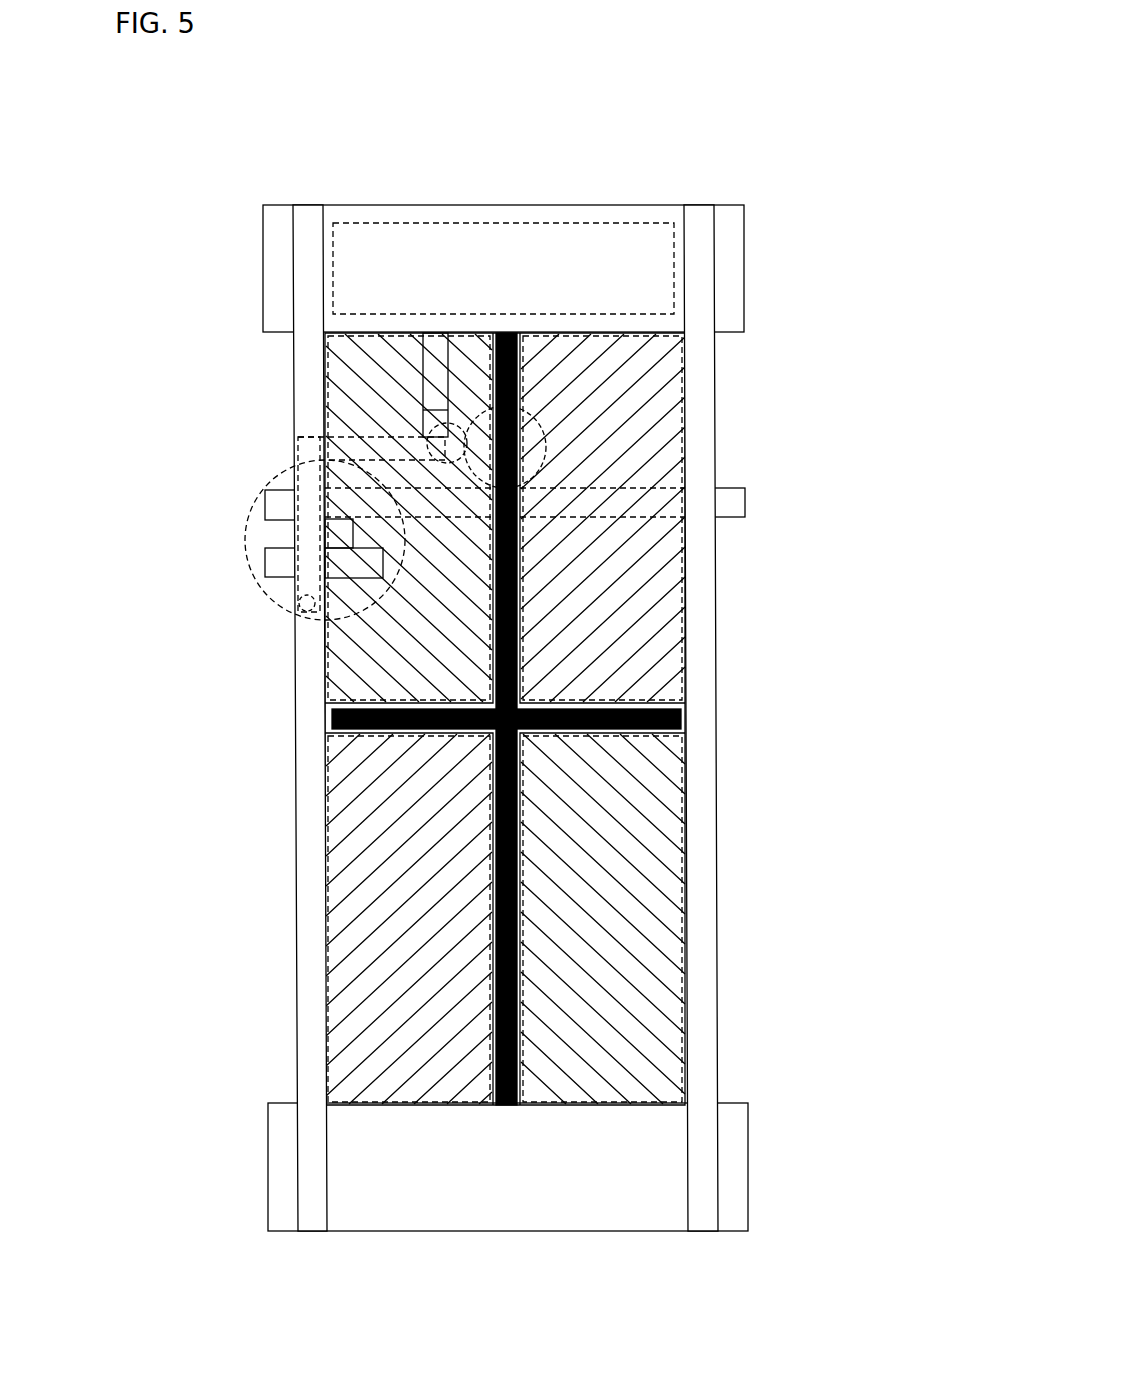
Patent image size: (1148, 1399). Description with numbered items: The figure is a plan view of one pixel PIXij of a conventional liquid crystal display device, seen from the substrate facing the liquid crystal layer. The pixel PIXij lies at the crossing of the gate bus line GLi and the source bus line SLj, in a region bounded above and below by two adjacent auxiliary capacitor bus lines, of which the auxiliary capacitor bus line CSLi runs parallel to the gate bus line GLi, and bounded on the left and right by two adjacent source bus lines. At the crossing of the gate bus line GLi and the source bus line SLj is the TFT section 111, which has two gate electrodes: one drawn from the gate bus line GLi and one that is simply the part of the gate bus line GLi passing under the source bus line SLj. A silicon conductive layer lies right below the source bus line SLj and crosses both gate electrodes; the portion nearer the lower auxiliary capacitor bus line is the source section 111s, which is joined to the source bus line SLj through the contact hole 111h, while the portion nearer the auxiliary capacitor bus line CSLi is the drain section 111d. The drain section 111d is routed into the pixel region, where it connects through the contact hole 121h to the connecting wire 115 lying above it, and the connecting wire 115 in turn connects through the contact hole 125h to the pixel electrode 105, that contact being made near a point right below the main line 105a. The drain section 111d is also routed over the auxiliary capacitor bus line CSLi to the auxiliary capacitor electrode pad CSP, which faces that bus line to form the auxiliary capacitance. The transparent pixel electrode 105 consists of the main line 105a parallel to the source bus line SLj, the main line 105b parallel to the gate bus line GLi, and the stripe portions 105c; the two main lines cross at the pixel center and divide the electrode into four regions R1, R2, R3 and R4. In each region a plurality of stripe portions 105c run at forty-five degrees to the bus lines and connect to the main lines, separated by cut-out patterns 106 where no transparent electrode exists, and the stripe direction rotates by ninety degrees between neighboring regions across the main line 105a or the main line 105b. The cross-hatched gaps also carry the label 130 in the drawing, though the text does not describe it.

The pixel PIXij is at (716, 107).
The auxiliary capacitor bus line CSLi is at (263, 272).
The auxiliary capacitor electrode pad CSP is at (586, 222).
The source bus line SLj is at (307, 218).
The gate bus line GLi is at (265, 503).
The pixel electrode 105 is at (576, 719).
The main line 105a is at (518, 567).
The main line 105b is at (643, 733).
The stripe portions 105c is at (606, 719).
The cut-out pattern 106 is at (672, 1037).
The slit 130 is at (414, 729).
The TFT section 111 is at (244, 533).
The drain section 111d is at (300, 433).
The source section 111s is at (297, 597).
The contact hole 111h is at (300, 605).
The connecting wire 115 is at (453, 440).
The contact hole 121h is at (440, 410).
The contact hole 125h is at (518, 447).
The region R1 is at (322, 382).
The region R2 is at (690, 382).
The region R3 is at (322, 1078).
The region R4 is at (690, 1075).